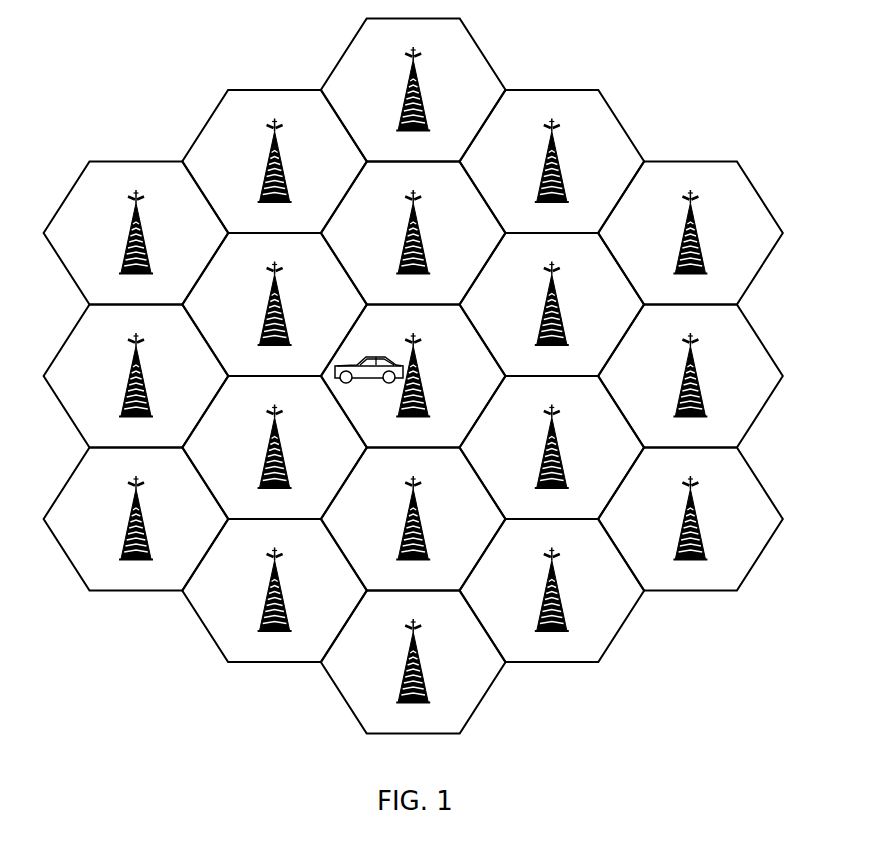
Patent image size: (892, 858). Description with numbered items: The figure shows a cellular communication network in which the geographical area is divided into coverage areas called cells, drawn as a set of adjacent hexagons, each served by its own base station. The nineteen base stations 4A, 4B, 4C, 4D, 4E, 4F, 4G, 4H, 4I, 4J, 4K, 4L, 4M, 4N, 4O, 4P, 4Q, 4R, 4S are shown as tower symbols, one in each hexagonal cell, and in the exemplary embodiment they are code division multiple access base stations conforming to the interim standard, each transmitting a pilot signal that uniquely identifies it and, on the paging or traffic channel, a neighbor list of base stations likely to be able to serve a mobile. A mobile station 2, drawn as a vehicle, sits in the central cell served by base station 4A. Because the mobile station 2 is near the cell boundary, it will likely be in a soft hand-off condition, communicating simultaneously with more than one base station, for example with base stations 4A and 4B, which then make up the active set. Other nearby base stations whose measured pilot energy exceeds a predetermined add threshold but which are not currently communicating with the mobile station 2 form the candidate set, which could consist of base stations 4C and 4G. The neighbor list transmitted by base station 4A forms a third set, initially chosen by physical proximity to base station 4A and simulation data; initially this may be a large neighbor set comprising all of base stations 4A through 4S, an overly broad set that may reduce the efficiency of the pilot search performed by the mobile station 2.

The mobile station 2 is at (377, 357).
The base station 4A is at (430, 375).
The base station 4B is at (430, 232).
The base station 4C is at (292, 304).
The base station 4D is at (292, 447).
The base station 4E is at (429, 518).
The base station 4F is at (568, 447).
The base station 4G is at (569, 304).
The base station 4H is at (430, 89).
The base station 4I is at (288, 161).
The base station 4J is at (149, 232).
The base station 4K is at (153, 375).
The base station 4L is at (151, 518).
The base station 4M is at (293, 590).
The base station 4N is at (430, 661).
The base station 4O is at (570, 590).
The base station 4P is at (706, 518).
The base station 4Q is at (708, 375).
The base station 4R is at (707, 232).
The base station 4S is at (568, 161).